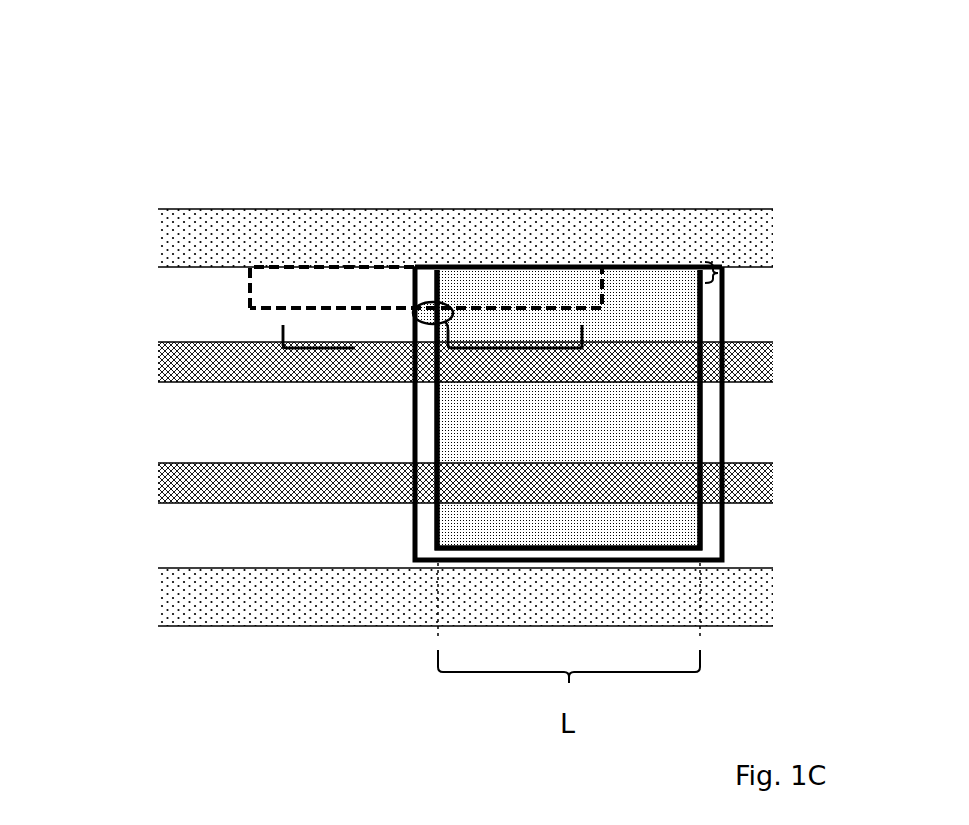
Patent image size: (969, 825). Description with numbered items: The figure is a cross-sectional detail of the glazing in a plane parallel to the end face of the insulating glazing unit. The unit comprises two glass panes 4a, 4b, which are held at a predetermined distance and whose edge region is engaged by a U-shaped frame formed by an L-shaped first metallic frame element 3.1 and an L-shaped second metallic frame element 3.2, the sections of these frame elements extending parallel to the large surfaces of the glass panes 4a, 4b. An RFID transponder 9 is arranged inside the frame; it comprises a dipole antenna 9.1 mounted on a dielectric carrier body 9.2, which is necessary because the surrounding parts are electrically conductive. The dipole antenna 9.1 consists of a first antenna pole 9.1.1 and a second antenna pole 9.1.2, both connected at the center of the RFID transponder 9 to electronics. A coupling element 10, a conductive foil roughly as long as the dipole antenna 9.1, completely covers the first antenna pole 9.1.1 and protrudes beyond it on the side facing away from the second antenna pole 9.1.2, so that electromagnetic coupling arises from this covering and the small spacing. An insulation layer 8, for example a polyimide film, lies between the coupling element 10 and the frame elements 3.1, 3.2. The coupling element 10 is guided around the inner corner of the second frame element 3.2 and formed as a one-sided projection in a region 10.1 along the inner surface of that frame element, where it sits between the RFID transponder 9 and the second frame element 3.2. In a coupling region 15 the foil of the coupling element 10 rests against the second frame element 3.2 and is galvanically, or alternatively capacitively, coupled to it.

The first metallic frame element 3.1 is at (178, 600).
The second metallic frame element 3.2 is at (188, 228).
The glass pane 4a is at (188, 487).
The glass pane 4b is at (178, 358).
The insulation layer 8 is at (727, 540).
The RFID transponder 9 is at (395, 181).
The dipole antenna 9.1 is at (433, 313).
The first antenna pole 9.1.1 is at (515, 348).
The second antenna pole 9.1.2 is at (355, 348).
The dielectric carrier body 9.2 is at (283, 292).
The coupling element 10 is at (703, 382).
The region of the coupling element 10.1 is at (725, 275).
The coupling region 15 is at (572, 268).